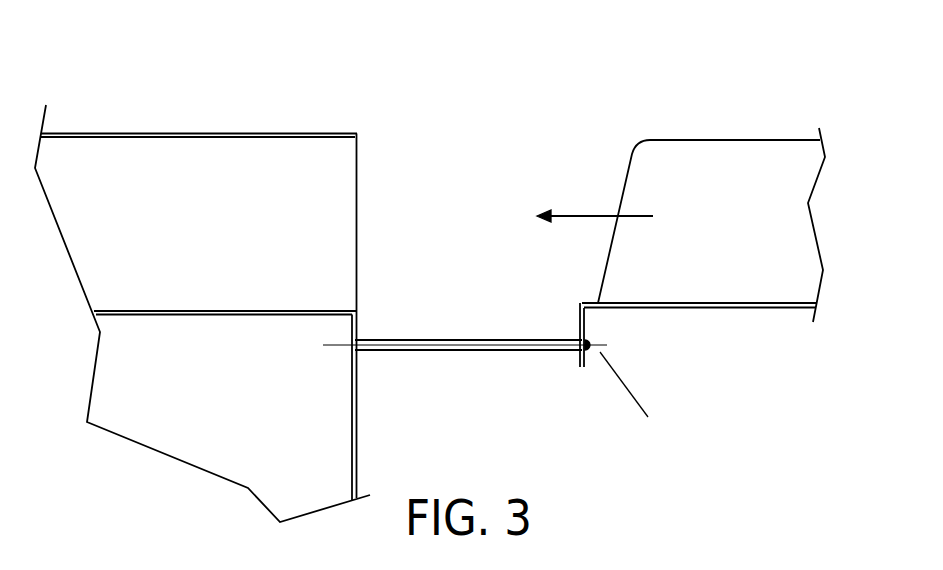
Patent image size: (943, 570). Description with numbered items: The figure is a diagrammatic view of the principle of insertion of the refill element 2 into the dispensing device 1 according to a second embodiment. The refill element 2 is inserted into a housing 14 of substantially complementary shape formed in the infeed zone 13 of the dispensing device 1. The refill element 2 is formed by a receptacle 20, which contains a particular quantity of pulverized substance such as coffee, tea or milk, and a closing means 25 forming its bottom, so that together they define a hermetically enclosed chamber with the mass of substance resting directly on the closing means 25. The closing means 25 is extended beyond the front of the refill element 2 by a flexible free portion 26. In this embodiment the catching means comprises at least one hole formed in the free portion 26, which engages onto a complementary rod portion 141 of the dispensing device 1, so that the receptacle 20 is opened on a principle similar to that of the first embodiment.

The dispensing device 1 is at (181, 88).
The housing 14 is at (275, 200).
The rod portion 141 is at (462, 352).
The infeed zone 13 is at (430, 148).
The refill element 2 is at (727, 103).
The receptacle 20 is at (792, 225).
The closing means 25 is at (713, 308).
The free portion 26 is at (562, 376).